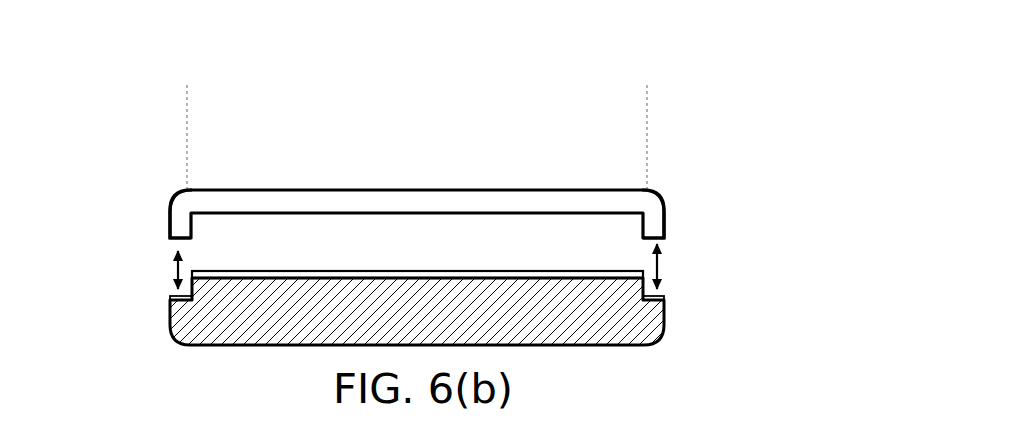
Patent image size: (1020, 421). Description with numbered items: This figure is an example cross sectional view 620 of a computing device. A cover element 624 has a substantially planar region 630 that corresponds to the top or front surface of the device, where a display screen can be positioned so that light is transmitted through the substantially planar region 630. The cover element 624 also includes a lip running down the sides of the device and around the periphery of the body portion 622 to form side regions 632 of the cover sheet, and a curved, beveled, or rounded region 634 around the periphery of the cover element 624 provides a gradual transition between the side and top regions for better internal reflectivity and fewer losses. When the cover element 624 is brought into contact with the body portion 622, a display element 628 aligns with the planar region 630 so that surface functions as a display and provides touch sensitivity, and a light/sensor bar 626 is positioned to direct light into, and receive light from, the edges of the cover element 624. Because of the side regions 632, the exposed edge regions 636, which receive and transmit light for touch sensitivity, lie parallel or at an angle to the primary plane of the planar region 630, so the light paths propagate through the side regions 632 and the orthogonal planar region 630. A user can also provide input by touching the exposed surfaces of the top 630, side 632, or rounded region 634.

The cross sectional view 620 is at (438, 197).
The body portion 622 is at (665, 323).
The cover element 624 is at (487, 191).
The light/sensor bar 626 is at (170, 297).
The display element 628 is at (323, 272).
The substantially planar region 630 is at (438, 132).
The side regions 632 is at (164, 220).
The rounded region 634 is at (167, 183).
The exposed edge regions 636 is at (181, 245).